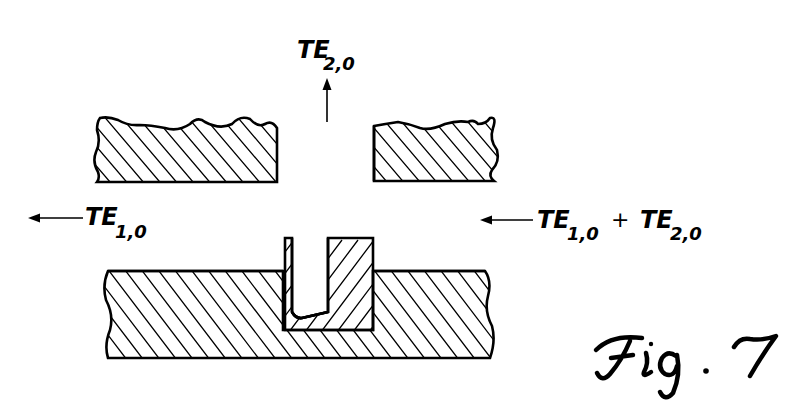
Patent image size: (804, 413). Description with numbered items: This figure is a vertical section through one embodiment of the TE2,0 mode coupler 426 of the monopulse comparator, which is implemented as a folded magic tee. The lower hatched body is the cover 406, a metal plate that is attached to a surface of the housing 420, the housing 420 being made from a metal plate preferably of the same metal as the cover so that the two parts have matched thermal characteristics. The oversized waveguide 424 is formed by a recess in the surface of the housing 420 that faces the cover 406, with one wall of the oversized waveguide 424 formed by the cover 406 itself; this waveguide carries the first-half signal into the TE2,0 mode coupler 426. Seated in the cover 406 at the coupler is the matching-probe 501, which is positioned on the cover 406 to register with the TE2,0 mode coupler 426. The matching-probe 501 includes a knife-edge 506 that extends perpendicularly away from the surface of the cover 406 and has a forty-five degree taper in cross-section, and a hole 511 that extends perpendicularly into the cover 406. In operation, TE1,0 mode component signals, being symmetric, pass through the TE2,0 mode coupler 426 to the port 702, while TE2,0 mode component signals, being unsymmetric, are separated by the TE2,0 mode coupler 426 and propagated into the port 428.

The cover 406 is at (494, 342).
The housing 420 is at (467, 122).
The oversized waveguide 424 is at (495, 264).
The TE2,0 mode coupler 426 is at (133, 72).
The port 428 is at (360, 115).
The matching-probe 501 is at (353, 225).
The knife-edge 506 is at (352, 238).
The hole 511 is at (310, 250).
The port 702 is at (100, 264).